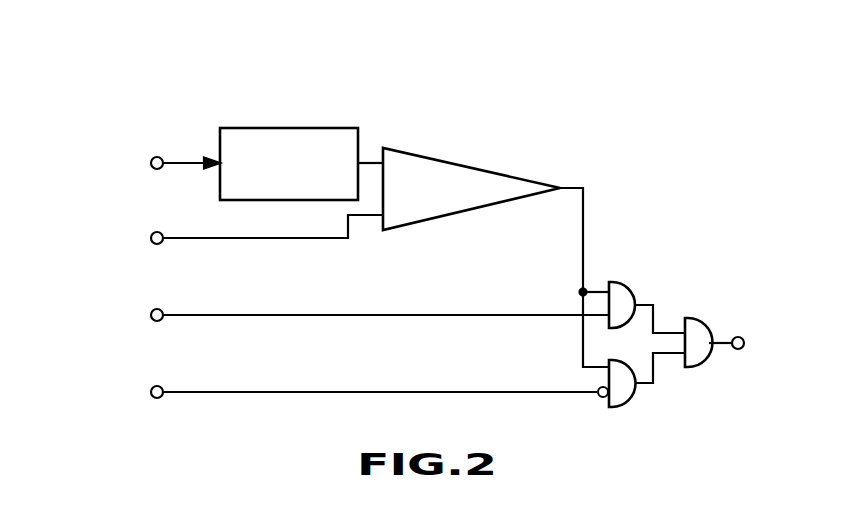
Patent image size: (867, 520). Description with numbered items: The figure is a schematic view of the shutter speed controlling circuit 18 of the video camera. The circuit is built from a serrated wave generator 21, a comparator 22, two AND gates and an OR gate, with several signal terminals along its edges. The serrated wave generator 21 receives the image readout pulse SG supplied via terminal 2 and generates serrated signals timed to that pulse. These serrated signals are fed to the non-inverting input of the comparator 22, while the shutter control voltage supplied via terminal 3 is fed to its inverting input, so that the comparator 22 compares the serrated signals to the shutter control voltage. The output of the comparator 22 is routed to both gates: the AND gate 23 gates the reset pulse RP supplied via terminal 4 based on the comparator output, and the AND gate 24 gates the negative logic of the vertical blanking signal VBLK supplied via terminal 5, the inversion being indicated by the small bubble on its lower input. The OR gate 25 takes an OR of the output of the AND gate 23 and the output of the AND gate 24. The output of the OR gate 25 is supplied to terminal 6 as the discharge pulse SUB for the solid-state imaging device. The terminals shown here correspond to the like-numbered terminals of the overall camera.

The terminal 2 is at (157, 156).
The terminal 3 is at (157, 231).
The terminal 4 is at (157, 308).
The terminal 5 is at (157, 385).
The terminal 6 is at (738, 336).
The shutter speed controlling circuit 18 is at (612, 163).
The serrated wave generator 21 is at (295, 127).
The comparator 22 is at (470, 167).
The AND gate 23 is at (616, 282).
The AND gate 24 is at (624, 401).
The OR gate 25 is at (689, 317).